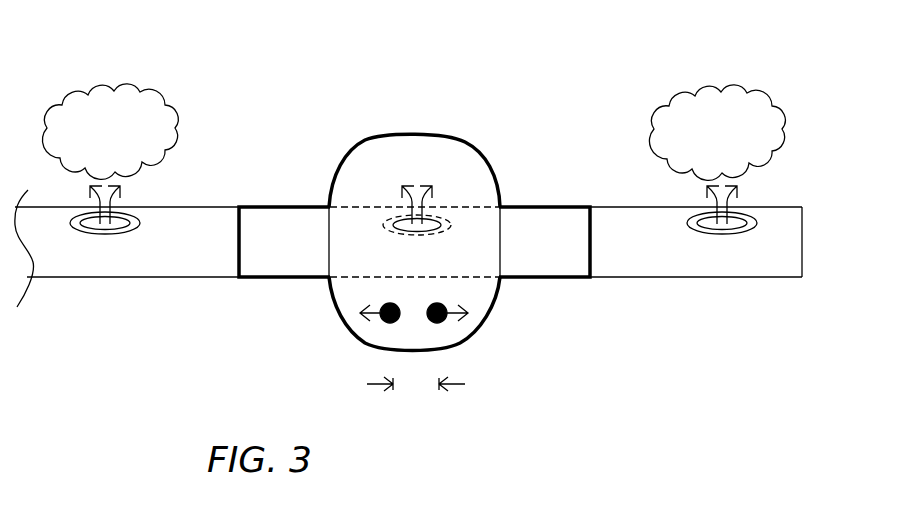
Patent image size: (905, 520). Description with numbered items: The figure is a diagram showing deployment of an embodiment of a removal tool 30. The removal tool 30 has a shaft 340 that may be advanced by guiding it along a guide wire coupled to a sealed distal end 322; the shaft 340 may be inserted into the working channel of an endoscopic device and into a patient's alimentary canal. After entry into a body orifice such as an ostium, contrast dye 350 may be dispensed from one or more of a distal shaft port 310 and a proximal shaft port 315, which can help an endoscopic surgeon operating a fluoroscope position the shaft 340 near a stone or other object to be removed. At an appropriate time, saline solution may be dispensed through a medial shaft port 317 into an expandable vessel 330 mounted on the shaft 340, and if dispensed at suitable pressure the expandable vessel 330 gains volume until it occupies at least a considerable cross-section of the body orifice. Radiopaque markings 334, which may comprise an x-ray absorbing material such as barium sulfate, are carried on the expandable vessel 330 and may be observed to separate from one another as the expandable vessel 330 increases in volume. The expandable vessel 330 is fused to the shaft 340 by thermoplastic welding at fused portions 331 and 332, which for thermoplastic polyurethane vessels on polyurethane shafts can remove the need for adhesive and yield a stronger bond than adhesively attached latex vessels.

The removal tool 30 is at (68, 39).
The distal shaft port 310 is at (708, 232).
The proximal shaft port 315 is at (105, 233).
The medial shaft port 317 is at (390, 230).
The sealed distal end 322 is at (800, 247).
The expandable vessel 330 is at (447, 137).
The fused portion 331 is at (302, 207).
The fused portion 332 is at (527, 207).
The radiopaque markings 334 is at (403, 323).
The shaft 340 is at (182, 278).
The contrast dye 350 is at (413, 132).